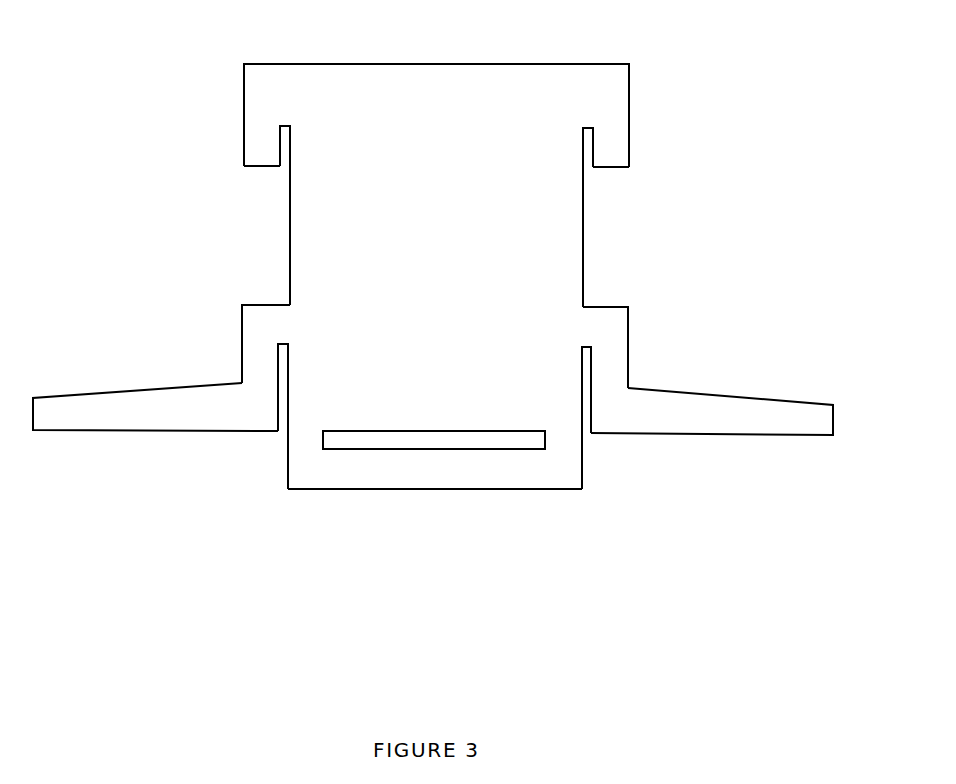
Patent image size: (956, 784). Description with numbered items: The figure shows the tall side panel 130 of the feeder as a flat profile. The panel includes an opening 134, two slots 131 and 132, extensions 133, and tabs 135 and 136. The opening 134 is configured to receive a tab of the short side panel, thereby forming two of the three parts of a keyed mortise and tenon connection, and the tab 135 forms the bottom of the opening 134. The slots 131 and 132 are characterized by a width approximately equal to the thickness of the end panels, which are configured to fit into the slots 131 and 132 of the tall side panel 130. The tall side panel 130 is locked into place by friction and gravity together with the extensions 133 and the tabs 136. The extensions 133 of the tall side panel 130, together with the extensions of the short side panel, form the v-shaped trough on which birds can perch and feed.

The tall side panel 130 is at (457, 64).
The slot 131 is at (281, 141).
The tab 136 is at (263, 155).
The slot 132 is at (281, 378).
The extension 133 is at (183, 410).
The opening 134 is at (361, 443).
The tab 135 is at (332, 479).